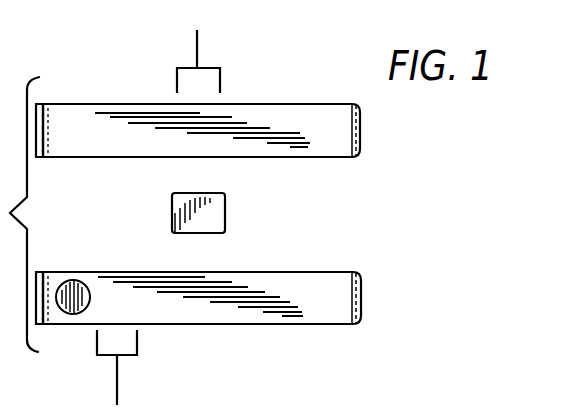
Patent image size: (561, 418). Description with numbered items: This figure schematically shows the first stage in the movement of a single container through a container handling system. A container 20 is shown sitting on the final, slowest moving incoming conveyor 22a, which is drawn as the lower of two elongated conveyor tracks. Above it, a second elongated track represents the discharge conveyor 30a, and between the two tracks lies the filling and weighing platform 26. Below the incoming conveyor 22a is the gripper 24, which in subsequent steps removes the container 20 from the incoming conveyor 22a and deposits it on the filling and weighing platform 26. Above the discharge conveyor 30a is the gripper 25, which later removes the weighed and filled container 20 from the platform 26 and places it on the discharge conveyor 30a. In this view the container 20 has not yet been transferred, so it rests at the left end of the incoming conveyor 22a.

The container 20 is at (71, 282).
The incoming conveyor 22a is at (213, 325).
The gripper 24 is at (97, 360).
The gripper 25 is at (238, 64).
The filling and weighing platform 26 is at (225, 215).
The discharge conveyor 30a is at (318, 108).